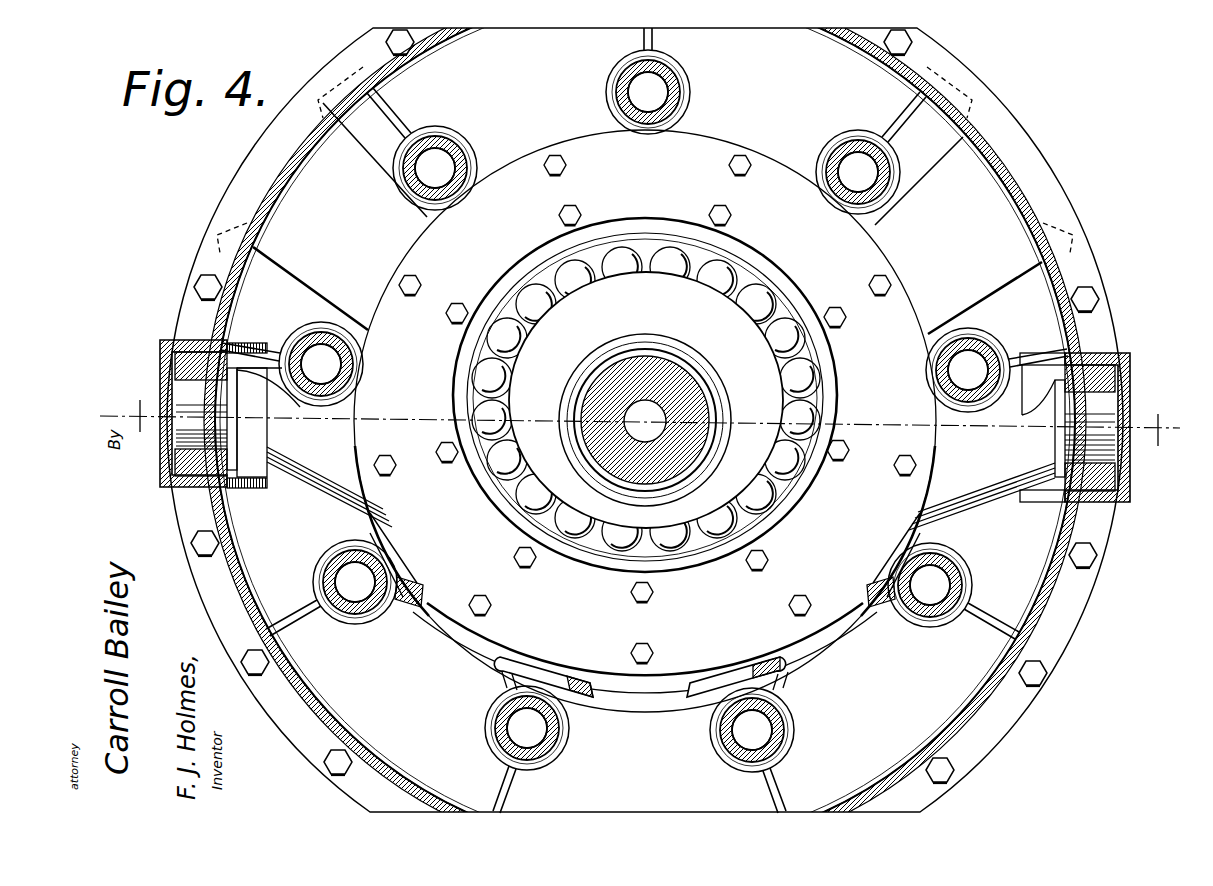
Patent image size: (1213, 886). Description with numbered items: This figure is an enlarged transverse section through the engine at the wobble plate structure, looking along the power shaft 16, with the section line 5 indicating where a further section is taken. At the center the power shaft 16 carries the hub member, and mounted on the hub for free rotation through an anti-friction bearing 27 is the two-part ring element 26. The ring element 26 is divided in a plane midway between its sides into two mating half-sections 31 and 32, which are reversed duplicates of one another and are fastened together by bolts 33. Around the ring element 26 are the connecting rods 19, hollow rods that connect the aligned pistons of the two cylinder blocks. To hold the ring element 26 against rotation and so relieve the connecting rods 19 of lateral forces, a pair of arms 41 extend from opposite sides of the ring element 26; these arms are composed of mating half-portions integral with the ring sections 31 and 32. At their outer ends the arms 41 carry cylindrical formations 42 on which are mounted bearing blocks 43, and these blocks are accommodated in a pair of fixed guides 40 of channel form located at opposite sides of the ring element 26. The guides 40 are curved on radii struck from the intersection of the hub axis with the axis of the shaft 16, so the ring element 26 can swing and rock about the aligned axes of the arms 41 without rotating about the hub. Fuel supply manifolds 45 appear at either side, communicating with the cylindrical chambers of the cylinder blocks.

The section line 5- 5 is at (641, 423).
The power shaft 16 is at (672, 384).
The connecting rods 19 is at (684, 92).
The ring element 26 is at (645, 421).
The anti-friction bearing 27 is at (757, 294).
The ring half-section 31 is at (611, 388).
The ring half-section 32 is at (630, 706).
The bolts 33 is at (772, 564).
The fixed guides 40 is at (1038, 373).
The arms 41 is at (646, 447).
The cylindrical formations 42 is at (188, 395).
The bearing blocks 43 is at (190, 470).
The fuel supply manifolds 45 is at (647, 355).